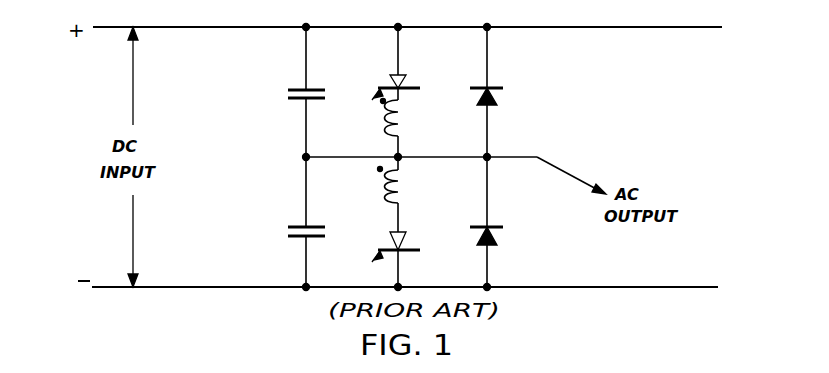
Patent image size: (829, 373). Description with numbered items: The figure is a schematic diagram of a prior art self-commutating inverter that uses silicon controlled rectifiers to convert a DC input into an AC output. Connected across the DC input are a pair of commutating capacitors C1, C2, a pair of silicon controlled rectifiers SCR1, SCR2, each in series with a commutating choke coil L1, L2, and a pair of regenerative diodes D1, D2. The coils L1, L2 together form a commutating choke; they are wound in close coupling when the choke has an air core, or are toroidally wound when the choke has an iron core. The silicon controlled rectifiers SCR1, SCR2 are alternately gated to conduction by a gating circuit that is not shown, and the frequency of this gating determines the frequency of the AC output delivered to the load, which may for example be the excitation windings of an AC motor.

The commutating capacitor C1 is at (287, 90).
The commutating capacitor C2 is at (287, 226).
The silicon controlled rectifier SCR1 is at (405, 80).
The silicon controlled rectifier SCR2 is at (414, 258).
The commutating choke coil L1 is at (392, 118).
The commutating choke coil L2 is at (392, 190).
The regenerative diode D1 is at (497, 100).
The regenerative diode D2 is at (497, 242).